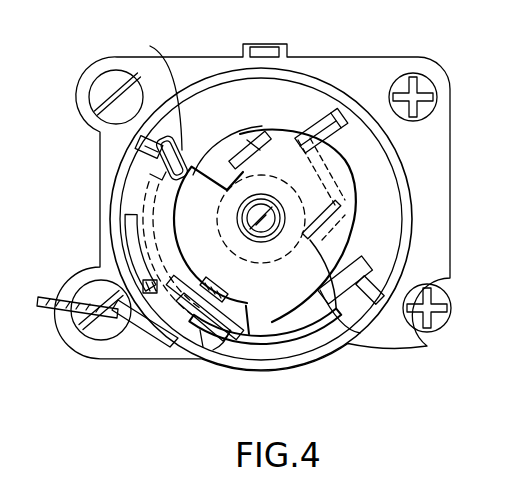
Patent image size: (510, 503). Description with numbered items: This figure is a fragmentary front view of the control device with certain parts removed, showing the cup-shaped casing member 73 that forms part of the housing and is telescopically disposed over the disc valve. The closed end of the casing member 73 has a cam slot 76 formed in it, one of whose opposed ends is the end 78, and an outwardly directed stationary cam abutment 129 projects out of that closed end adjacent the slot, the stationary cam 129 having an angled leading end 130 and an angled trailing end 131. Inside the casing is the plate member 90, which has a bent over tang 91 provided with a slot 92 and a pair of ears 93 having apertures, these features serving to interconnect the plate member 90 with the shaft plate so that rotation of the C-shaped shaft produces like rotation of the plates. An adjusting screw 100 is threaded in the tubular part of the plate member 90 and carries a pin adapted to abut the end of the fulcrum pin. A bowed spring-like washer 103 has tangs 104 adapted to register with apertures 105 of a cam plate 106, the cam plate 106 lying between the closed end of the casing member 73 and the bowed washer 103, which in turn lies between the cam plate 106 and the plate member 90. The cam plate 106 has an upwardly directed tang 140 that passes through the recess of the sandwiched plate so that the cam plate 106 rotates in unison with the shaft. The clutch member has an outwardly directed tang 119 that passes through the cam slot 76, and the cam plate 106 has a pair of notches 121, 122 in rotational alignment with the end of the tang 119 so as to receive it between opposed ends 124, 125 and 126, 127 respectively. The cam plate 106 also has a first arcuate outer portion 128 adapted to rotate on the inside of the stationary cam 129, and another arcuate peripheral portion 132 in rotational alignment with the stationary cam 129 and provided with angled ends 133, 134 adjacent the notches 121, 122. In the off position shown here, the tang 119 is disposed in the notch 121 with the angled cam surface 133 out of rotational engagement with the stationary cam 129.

The cup-shaped casing member 73 is at (203, 347).
The cam slot 76 is at (145, 211).
The end of cam slot 78 is at (258, 338).
The plate member 90 is at (321, 358).
The bent over tang 91 is at (213, 350).
The slot 92 is at (265, 226).
The ears 93 is at (240, 147).
The adjusting screw 100 is at (250, 259).
The bowed spring-like washer 103 is at (222, 132).
The tangs 104 is at (330, 150).
The apertures 105 is at (365, 147).
The cam plate 106 is at (378, 180).
The outwardly directed tang 119 is at (163, 170).
The notch 121 is at (130, 124).
The notch 122 is at (352, 283).
The opposed end of notch 124 is at (146, 90).
The opposed end of notch 125 is at (160, 178).
The opposed end of notch 126 is at (372, 262).
The opposed end of notch 127 is at (360, 335).
The first arcuate outer portion 128 is at (290, 337).
The stationary cam abutment 129 is at (130, 261).
The angled leading end 130 is at (128, 228).
The angled trailing end 131 is at (148, 305).
The arcuate peripheral portion 132 is at (362, 118).
The angled end 133 is at (152, 155).
The angled end 134 is at (432, 345).
The upwardly directed tang 140 is at (183, 313).